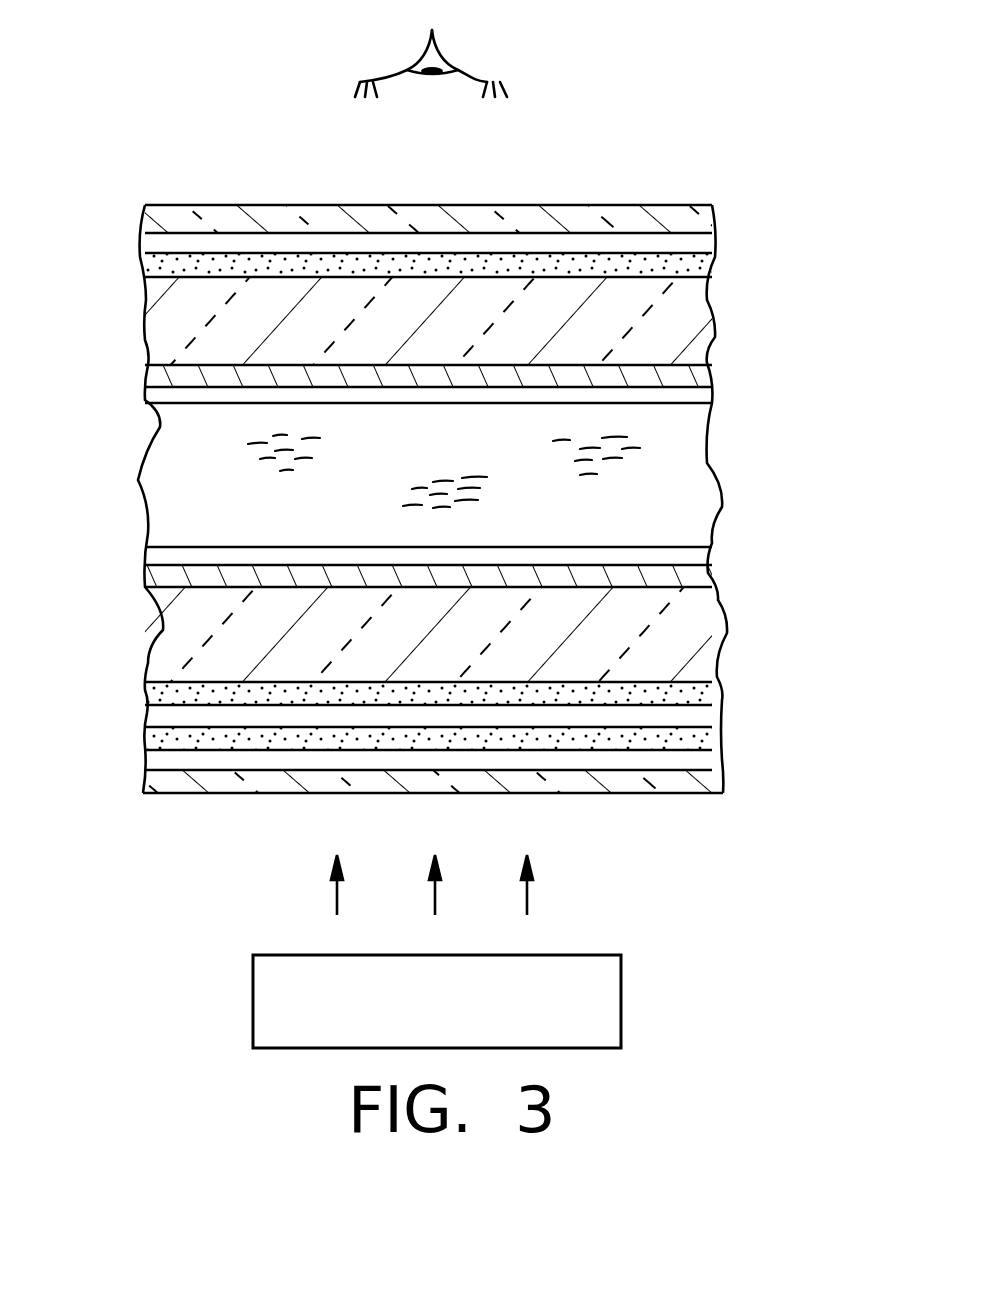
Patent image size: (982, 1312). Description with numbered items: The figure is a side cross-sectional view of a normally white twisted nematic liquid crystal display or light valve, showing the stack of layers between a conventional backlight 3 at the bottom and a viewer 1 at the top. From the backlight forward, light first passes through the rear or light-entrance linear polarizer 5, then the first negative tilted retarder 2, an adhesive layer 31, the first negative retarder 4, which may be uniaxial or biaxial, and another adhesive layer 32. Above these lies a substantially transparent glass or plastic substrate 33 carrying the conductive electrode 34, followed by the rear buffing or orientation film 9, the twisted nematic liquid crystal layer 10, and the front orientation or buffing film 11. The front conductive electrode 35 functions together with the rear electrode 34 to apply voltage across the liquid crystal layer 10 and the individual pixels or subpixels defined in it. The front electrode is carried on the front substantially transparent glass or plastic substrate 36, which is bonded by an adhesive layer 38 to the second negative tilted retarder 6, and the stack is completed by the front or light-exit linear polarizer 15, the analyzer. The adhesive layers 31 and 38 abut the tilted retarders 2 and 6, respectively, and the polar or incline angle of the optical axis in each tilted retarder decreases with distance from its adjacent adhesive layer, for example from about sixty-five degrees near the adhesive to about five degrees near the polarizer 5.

The viewer 1 is at (472, 72).
The first rear tilted negative uniaxial retarder 2 is at (712, 758).
The backlight 3 is at (607, 1003).
The first rear negative non-tilted retarder 4 is at (710, 712).
The rear linear polarizer 5 is at (712, 780).
The second front tilted negative uniaxial retarder 6 is at (155, 242).
The rear buffing or orientation film 9 is at (700, 553).
The twisted nematic liquid crystal layer 10 is at (687, 472).
The front buffing or orientation film 11 is at (697, 395).
The front linear polarizer 15 is at (698, 218).
The adhesive layer 31 is at (155, 737).
The adhesive layer 32 is at (157, 697).
The rear substrate 33 is at (700, 632).
The rear conductive electrode 34 is at (157, 574).
The front conductive electrode 35 is at (160, 373).
The front substrate 36 is at (690, 320).
The adhesive layer 38 is at (712, 262).